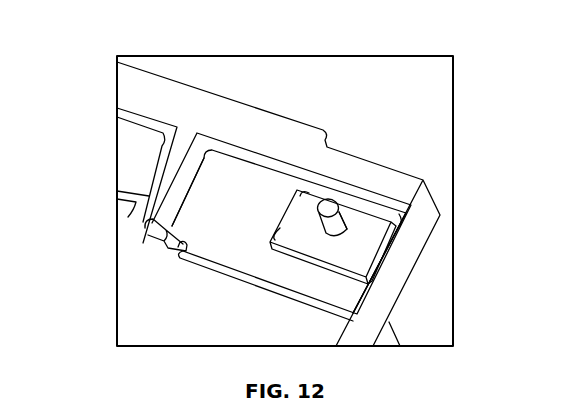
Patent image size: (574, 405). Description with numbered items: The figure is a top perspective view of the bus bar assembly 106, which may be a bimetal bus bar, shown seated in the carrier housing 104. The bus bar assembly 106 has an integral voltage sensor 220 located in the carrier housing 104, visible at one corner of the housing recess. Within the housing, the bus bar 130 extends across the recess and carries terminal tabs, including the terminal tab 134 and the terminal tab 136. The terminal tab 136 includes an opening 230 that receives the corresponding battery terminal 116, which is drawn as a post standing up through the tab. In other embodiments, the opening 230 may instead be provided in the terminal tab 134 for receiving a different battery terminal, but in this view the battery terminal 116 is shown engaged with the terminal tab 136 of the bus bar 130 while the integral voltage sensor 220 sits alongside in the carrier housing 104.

The carrier housing 104 is at (234, 88).
The bus bar 130 is at (222, 173).
The terminal tab 134 is at (267, 188).
The bus bar assembly 106 is at (300, 158).
The terminal tab 136 is at (367, 247).
The battery terminal 116 is at (328, 205).
The opening 230 is at (356, 220).
The integral voltage sensor 220 is at (156, 236).